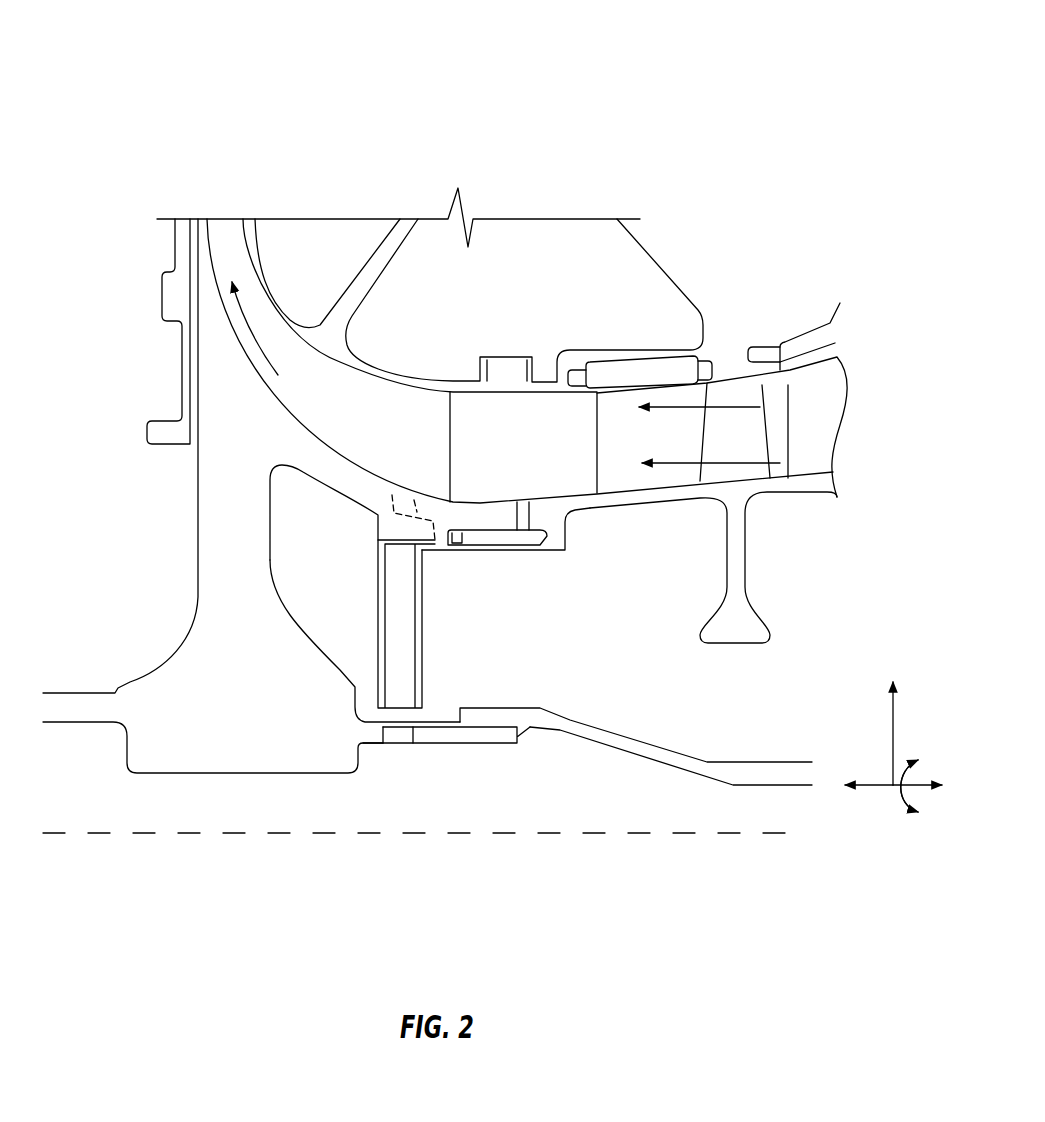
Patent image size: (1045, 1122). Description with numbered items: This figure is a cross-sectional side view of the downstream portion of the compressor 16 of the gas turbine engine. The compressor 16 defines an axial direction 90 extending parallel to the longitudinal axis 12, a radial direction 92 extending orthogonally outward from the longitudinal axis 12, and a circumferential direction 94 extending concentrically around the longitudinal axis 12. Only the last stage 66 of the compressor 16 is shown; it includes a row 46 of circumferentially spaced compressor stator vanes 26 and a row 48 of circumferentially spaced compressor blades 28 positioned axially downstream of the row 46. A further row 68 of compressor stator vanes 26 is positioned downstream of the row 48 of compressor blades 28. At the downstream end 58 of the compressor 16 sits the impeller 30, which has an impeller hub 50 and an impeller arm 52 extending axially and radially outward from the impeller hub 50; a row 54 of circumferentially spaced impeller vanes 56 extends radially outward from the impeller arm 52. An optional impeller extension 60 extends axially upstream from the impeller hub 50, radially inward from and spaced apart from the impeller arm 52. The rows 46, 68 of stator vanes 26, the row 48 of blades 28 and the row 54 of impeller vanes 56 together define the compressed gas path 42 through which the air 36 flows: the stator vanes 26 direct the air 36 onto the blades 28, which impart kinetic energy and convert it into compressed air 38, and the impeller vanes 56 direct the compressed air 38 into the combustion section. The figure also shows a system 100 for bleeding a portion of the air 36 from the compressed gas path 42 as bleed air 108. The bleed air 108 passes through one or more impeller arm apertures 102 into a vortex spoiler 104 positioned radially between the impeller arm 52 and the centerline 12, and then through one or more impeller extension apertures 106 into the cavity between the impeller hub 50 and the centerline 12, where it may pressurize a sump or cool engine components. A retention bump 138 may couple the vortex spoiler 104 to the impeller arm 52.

The longitudinal axis 12 is at (102, 838).
The compressor 16 is at (197, 109).
The compressor stator vanes 26 is at (728, 432).
The compressor blades 28 is at (755, 431).
The impeller 30 is at (108, 455).
The air 36 is at (682, 393).
The compressed air 38 is at (250, 325).
The compressed gas path 42 is at (662, 407).
The row of compressor stator vanes 46 is at (828, 374).
The row of compressor blades 48 is at (767, 407).
The impeller hub 50 is at (208, 715).
The impeller arm 52 is at (353, 488).
The row of impeller vanes 54 is at (436, 433).
The impeller vanes 56 is at (420, 330).
The downstream end 58 is at (452, 341).
The impeller extension 60 is at (453, 745).
The last stage 66 is at (776, 536).
The row of compressor stator vanes 68 is at (608, 437).
The axial direction 90 is at (875, 787).
The radial direction 92 is at (895, 725).
The circumferential direction 94 is at (897, 810).
The system for bleeding air 100 is at (550, 650).
The impeller arm apertures 102 is at (413, 481).
The vortex spoiler 104 is at (423, 612).
The impeller extension apertures 106 is at (409, 712).
The bleed air 108 is at (397, 740).
The retention bump 138 is at (456, 546).